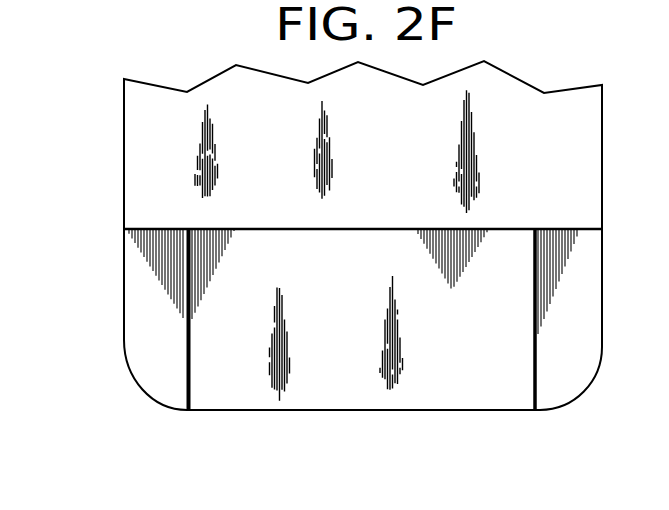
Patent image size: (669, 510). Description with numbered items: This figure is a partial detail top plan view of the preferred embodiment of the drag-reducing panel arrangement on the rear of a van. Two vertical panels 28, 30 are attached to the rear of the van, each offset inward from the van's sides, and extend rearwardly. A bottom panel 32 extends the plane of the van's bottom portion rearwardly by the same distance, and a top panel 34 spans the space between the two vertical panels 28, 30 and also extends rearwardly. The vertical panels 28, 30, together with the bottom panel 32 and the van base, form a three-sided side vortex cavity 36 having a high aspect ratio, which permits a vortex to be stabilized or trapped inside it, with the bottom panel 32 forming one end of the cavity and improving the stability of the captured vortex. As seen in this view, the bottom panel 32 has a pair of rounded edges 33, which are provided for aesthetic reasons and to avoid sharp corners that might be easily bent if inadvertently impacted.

The vertical panel 28 is at (190, 359).
The vertical panel 30 is at (533, 355).
The bottom panel 32 is at (143, 337).
The rounded edges 33 is at (132, 385).
The top panel 34 is at (356, 340).
The side vortex cavity 36 is at (512, 229).